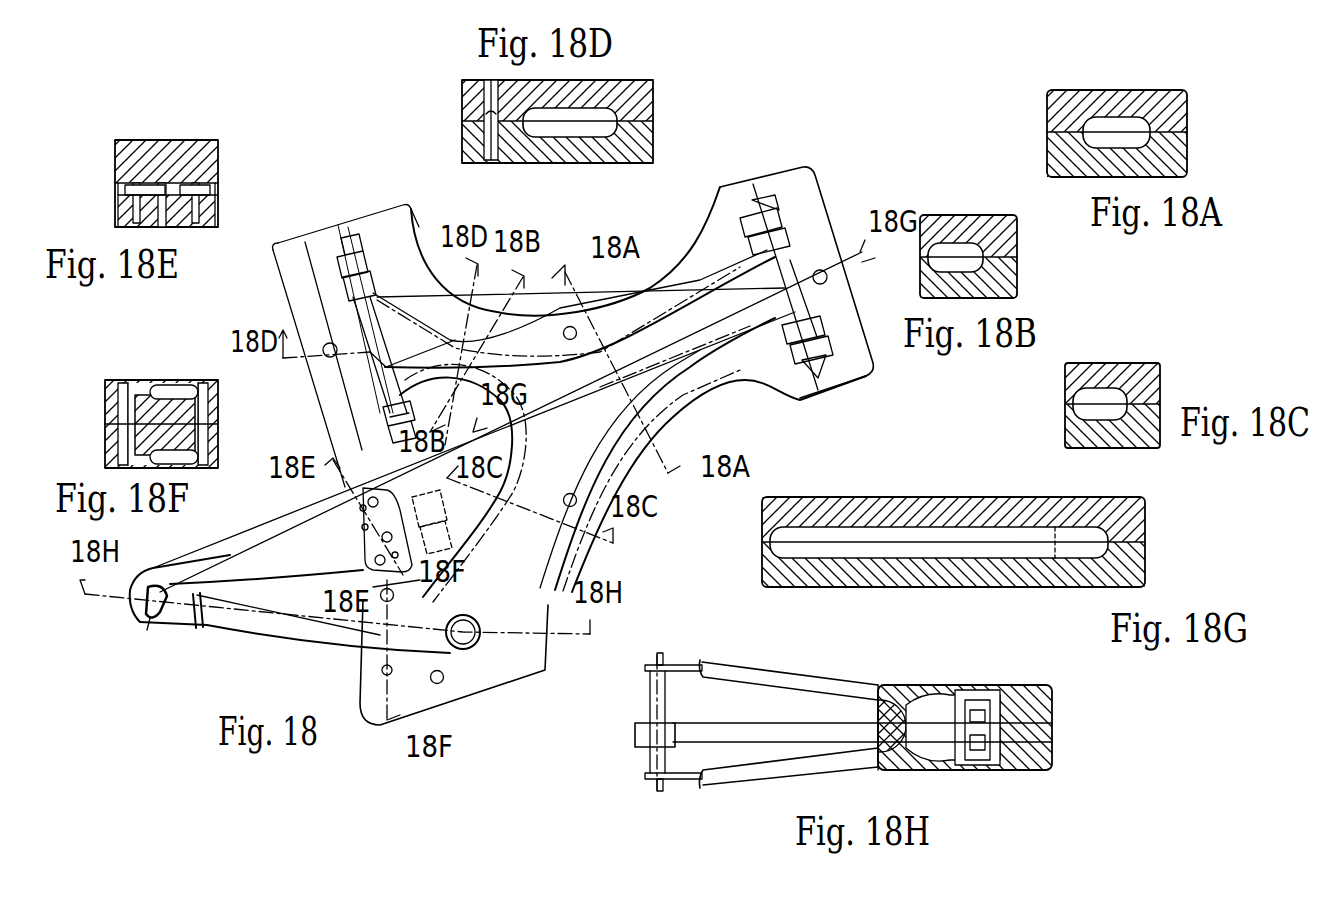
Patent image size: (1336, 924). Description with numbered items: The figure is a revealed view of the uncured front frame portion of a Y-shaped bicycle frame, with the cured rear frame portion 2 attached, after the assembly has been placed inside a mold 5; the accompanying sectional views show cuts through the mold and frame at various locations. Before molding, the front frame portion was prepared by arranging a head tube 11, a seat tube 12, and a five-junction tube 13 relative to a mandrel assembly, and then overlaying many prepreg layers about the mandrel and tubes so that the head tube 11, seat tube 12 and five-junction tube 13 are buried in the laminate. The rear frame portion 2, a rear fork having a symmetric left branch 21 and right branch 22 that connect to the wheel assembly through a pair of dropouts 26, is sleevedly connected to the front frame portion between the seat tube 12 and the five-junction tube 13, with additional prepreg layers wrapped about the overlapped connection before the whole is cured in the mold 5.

In FIG. 18, the rear frame portion 2 is at (250, 627).
In FIG. 18, the mold 5 is at (835, 225).
In FIG. 18, the head tube 11 is at (795, 262).
In FIG. 18, the seat tube 12 is at (310, 245).
In FIG. 18, the five-junction tube 13 is at (477, 703).
In FIG. 18H, the left branch 21 is at (780, 675).
In FIG. 18H, the right branch 22 is at (738, 785).
In FIG. 18, the dropout 26 is at (138, 604).
In FIG. 18H, the dropout 26 is at (667, 795).